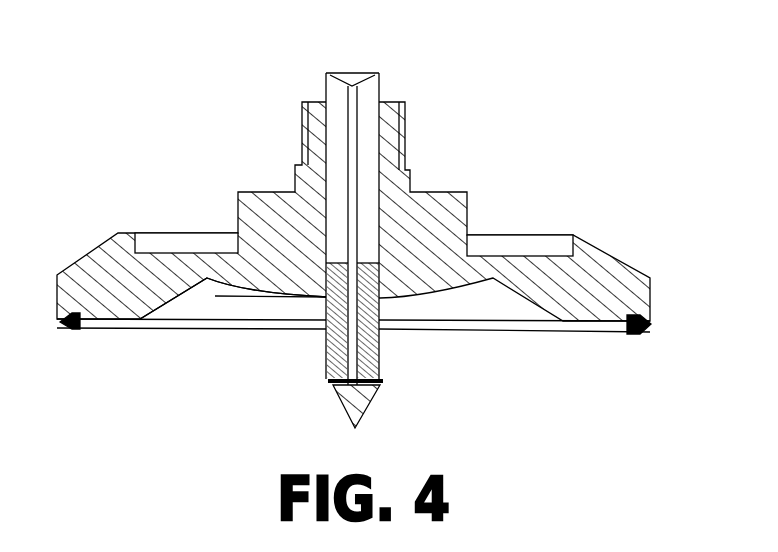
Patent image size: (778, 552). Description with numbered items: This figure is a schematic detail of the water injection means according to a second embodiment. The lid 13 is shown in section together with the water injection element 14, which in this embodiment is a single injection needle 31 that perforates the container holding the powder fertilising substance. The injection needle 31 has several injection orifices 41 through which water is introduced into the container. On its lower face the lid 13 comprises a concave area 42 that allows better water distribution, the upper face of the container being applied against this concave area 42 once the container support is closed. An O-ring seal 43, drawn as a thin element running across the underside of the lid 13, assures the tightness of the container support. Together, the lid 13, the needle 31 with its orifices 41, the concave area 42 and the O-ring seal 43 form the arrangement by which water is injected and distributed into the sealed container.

The lid 13 is at (91, 251).
The needle 14 is at (372, 88).
The injection needle 31 is at (365, 405).
The injection orifices 41 is at (328, 381).
The concave area 42 is at (208, 279).
The O-ring seal 43 is at (637, 333).